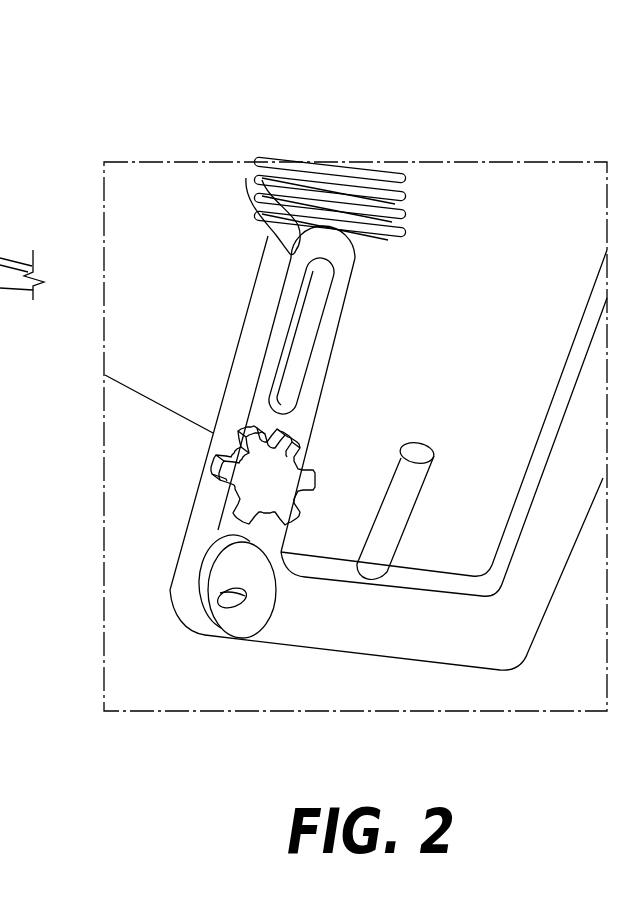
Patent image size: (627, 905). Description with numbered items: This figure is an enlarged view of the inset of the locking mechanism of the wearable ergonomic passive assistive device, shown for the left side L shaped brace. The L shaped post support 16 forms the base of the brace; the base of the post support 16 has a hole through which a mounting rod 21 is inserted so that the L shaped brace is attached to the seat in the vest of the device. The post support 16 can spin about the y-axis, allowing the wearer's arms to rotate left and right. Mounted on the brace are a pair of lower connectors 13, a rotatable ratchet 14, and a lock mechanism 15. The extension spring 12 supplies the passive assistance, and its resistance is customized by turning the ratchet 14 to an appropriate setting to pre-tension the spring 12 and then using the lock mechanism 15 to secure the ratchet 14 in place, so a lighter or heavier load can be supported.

The spring 12 is at (404, 170).
The lower connectors 13 is at (349, 320).
The ratchet 14 is at (213, 505).
The lock mechanism 15 is at (222, 631).
The post support 16 is at (578, 582).
The mounting rod 21 is at (355, 556).